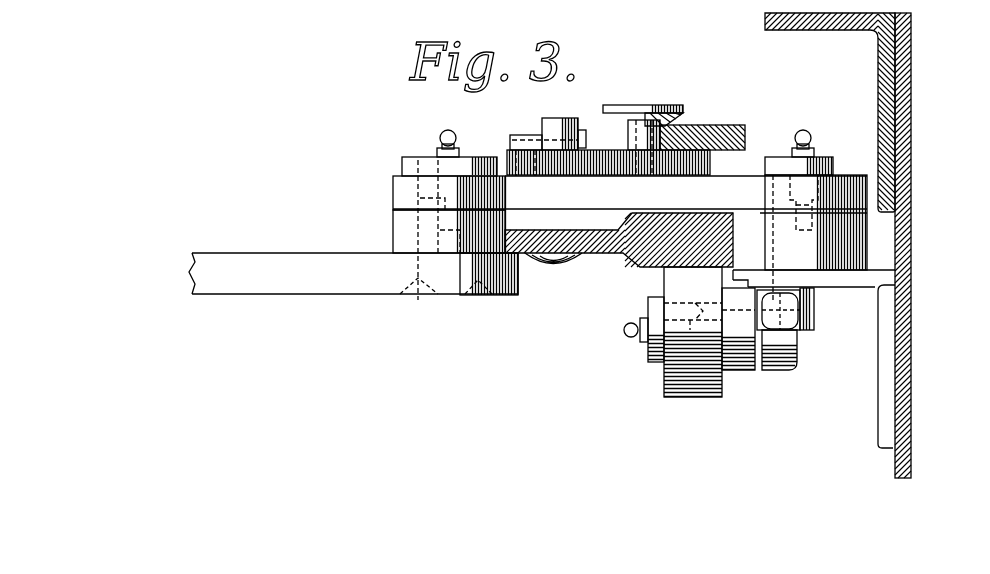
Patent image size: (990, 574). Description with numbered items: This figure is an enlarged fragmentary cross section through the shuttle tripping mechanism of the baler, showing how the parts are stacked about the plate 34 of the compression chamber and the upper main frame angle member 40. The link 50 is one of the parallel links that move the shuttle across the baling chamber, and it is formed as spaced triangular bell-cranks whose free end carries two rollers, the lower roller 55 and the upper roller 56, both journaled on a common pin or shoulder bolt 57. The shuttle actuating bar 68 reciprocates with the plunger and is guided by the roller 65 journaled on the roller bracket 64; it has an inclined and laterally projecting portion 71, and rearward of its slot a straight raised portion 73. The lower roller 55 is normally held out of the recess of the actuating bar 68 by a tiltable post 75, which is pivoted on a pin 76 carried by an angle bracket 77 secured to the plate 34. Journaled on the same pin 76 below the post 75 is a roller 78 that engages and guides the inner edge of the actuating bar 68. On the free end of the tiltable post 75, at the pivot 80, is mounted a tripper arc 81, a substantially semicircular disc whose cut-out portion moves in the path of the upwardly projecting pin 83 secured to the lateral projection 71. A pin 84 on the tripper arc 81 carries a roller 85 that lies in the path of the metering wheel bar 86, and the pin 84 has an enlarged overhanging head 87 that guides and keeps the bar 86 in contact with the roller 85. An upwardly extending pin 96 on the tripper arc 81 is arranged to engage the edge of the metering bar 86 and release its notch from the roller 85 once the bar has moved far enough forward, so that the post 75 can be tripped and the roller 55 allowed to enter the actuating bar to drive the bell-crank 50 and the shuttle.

The plate of the compression chamber 34 is at (905, 303).
The upper main frame angle member 40 is at (795, 20).
The link (bell-crank member) 50 is at (306, 296).
The lower roller 55 is at (393, 224).
The upper roller 56 is at (393, 187).
The pin or shoulder bolt 57 is at (418, 277).
The roller bracket 64 is at (738, 372).
The roller 65 is at (677, 397).
The shuttle actuating bar 68 is at (637, 269).
The inclined and laterally projecting portion 71 is at (440, 241).
The straight raised portion 73 is at (661, 216).
The tiltable post 75 is at (752, 186).
The pin 76 is at (822, 200).
The angle bracket 77 is at (860, 278).
The roller 78 is at (857, 243).
The pivot 80 is at (520, 150).
The tripper arc 81 is at (710, 162).
The pin 83 is at (597, 258).
The pin 84 is at (628, 126).
The roller 85 is at (628, 140).
The metering wheel bar 86 is at (731, 125).
The enlarged overhanging head 87 is at (622, 105).
The pin 96 is at (546, 120).